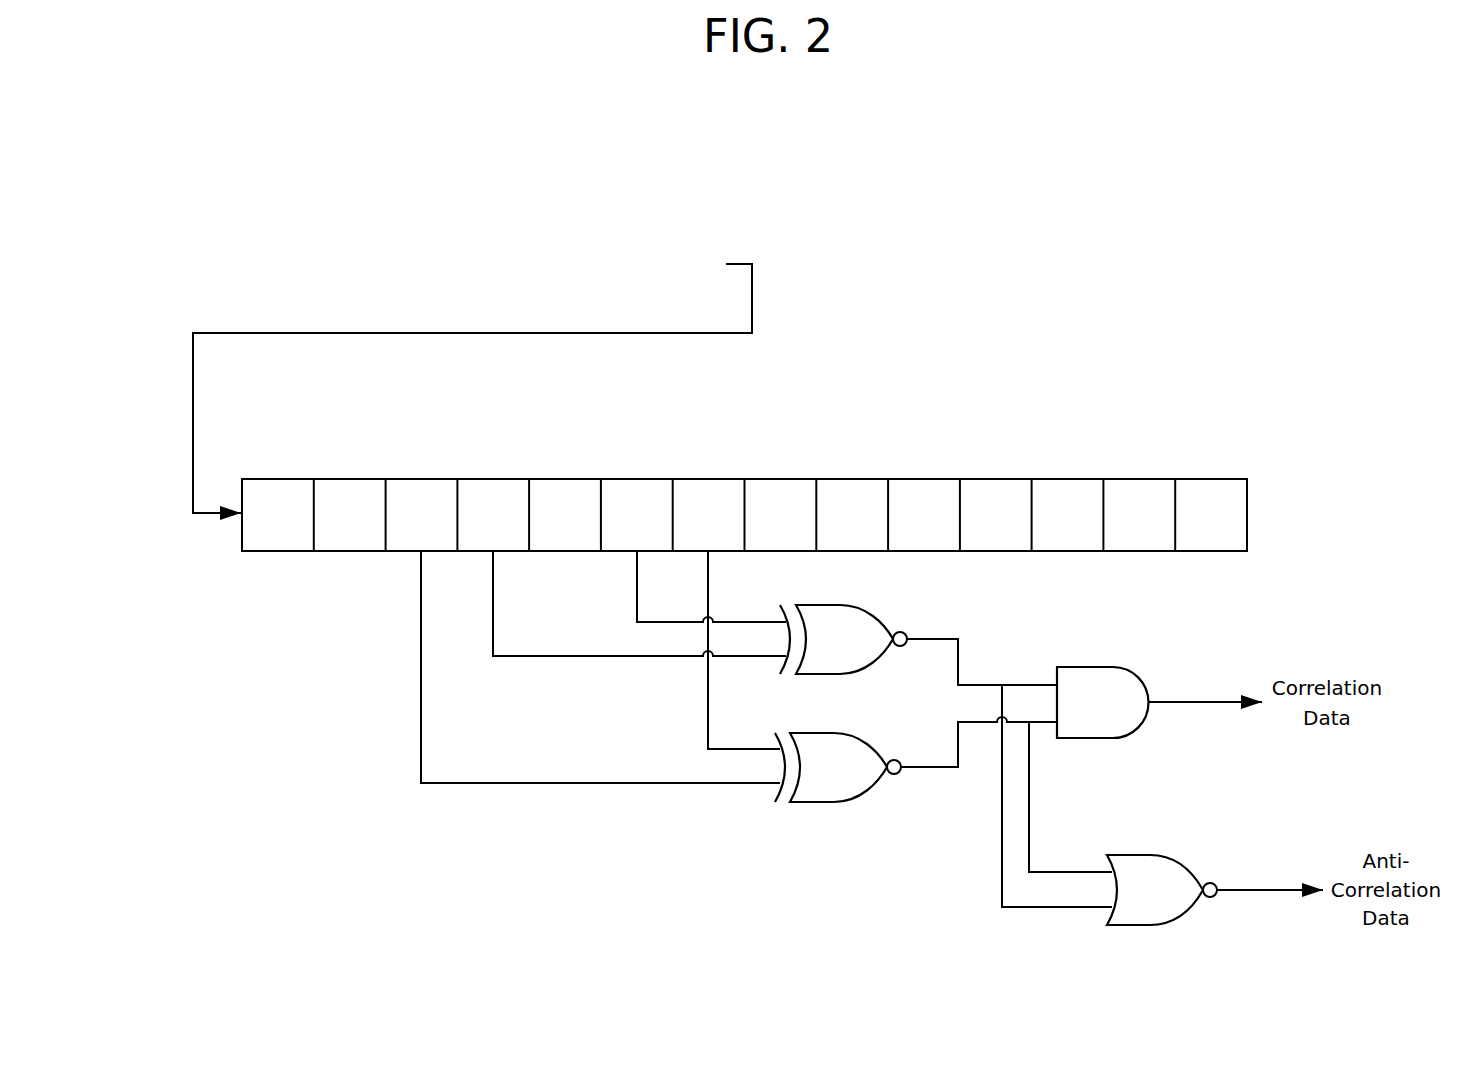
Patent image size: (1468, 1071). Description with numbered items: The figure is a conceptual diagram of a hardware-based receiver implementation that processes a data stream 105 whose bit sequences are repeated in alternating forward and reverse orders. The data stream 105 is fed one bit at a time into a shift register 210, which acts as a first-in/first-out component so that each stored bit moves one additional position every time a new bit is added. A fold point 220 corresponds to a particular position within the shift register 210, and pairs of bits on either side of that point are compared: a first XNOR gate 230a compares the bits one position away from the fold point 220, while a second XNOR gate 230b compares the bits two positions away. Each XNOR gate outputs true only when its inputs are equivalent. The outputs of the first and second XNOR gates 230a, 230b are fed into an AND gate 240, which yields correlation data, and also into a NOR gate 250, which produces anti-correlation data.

The data stream 105 is at (531, 241).
The shift register 210 is at (1251, 477).
The fold point 220 is at (566, 469).
The first XNOR gate 230a is at (893, 626).
The second XNOR gate 230b is at (892, 780).
The AND gate 240 is at (1121, 662).
The NOR gate 250 is at (1204, 904).